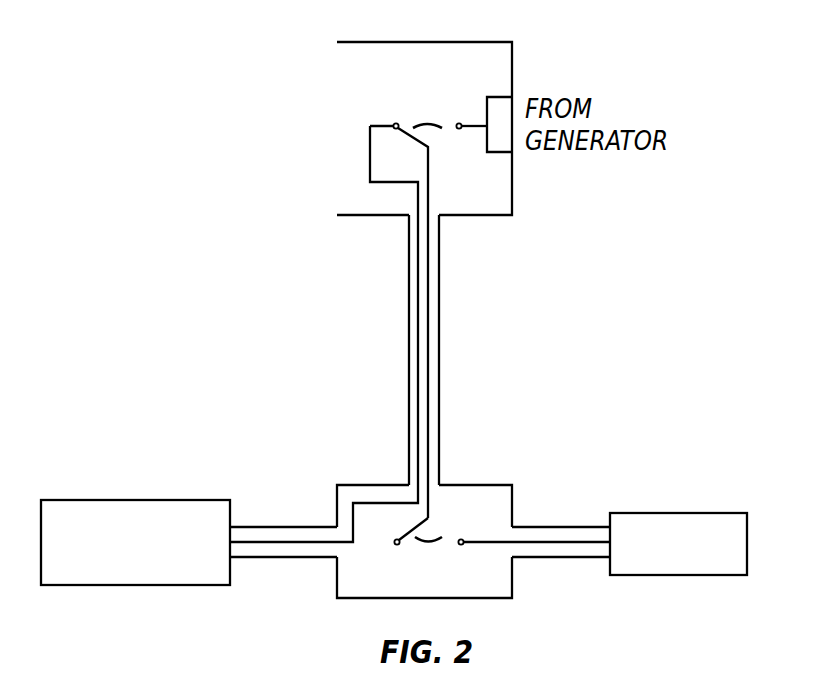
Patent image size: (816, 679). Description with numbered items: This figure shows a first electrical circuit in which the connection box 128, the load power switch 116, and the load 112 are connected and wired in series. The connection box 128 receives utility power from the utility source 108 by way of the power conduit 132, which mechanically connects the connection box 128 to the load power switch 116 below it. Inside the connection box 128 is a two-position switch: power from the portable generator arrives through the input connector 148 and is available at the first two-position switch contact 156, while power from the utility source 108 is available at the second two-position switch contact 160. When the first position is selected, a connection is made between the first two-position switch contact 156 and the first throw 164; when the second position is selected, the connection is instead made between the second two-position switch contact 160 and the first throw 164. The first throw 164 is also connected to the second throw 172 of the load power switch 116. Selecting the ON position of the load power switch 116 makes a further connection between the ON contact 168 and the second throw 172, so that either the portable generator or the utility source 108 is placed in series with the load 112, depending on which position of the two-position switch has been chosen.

The utility source 108 is at (117, 500).
The load 112 is at (628, 513).
The load power switch 116 is at (457, 485).
The connection box 128 is at (388, 42).
The power conduit 132 is at (442, 298).
The input connector 148 is at (510, 101).
The first two-position switch contact 156 is at (459, 123).
The second two-position switch contact 160 is at (393, 124).
The first throw 164 is at (428, 147).
The ON contact 168 is at (462, 546).
The second throw 172 is at (428, 518).